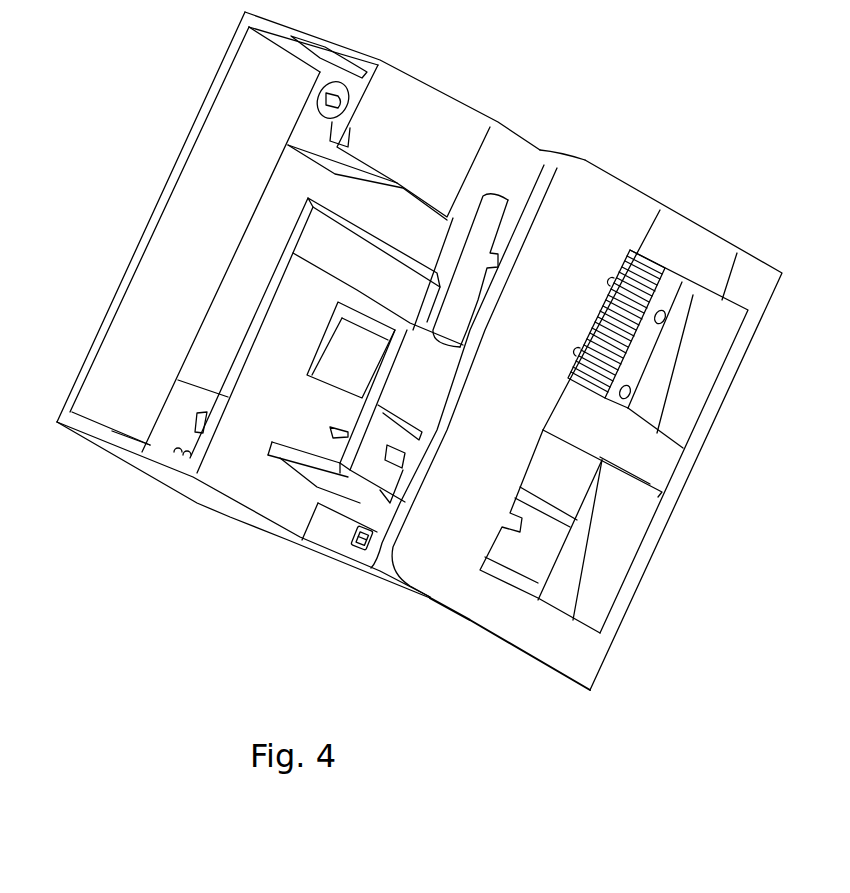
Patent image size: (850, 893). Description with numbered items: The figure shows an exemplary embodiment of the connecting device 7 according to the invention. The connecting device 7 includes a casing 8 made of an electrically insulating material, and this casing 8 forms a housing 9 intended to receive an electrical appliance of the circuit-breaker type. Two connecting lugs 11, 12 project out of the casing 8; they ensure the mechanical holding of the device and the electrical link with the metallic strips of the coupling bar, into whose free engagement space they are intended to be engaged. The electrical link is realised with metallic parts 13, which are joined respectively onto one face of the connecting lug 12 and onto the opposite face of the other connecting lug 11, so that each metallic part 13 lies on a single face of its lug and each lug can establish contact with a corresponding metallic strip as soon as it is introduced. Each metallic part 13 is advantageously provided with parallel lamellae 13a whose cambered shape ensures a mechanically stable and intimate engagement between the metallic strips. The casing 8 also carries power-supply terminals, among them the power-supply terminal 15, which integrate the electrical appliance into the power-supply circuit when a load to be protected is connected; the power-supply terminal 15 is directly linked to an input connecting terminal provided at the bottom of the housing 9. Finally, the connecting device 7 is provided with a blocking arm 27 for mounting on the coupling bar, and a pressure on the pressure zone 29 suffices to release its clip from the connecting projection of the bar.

The connecting device 7 is at (420, 648).
The casing 8 is at (288, 542).
The housing 9 is at (225, 139).
The connecting lug 11 is at (559, 567).
The connecting lug 12 is at (656, 365).
The metallic part 13 is at (672, 296).
The parallel lamellae 13a is at (643, 284).
The power-supply terminal 15 is at (334, 428).
The blocking arm 27 is at (590, 692).
The pressure zone 29 is at (565, 161).